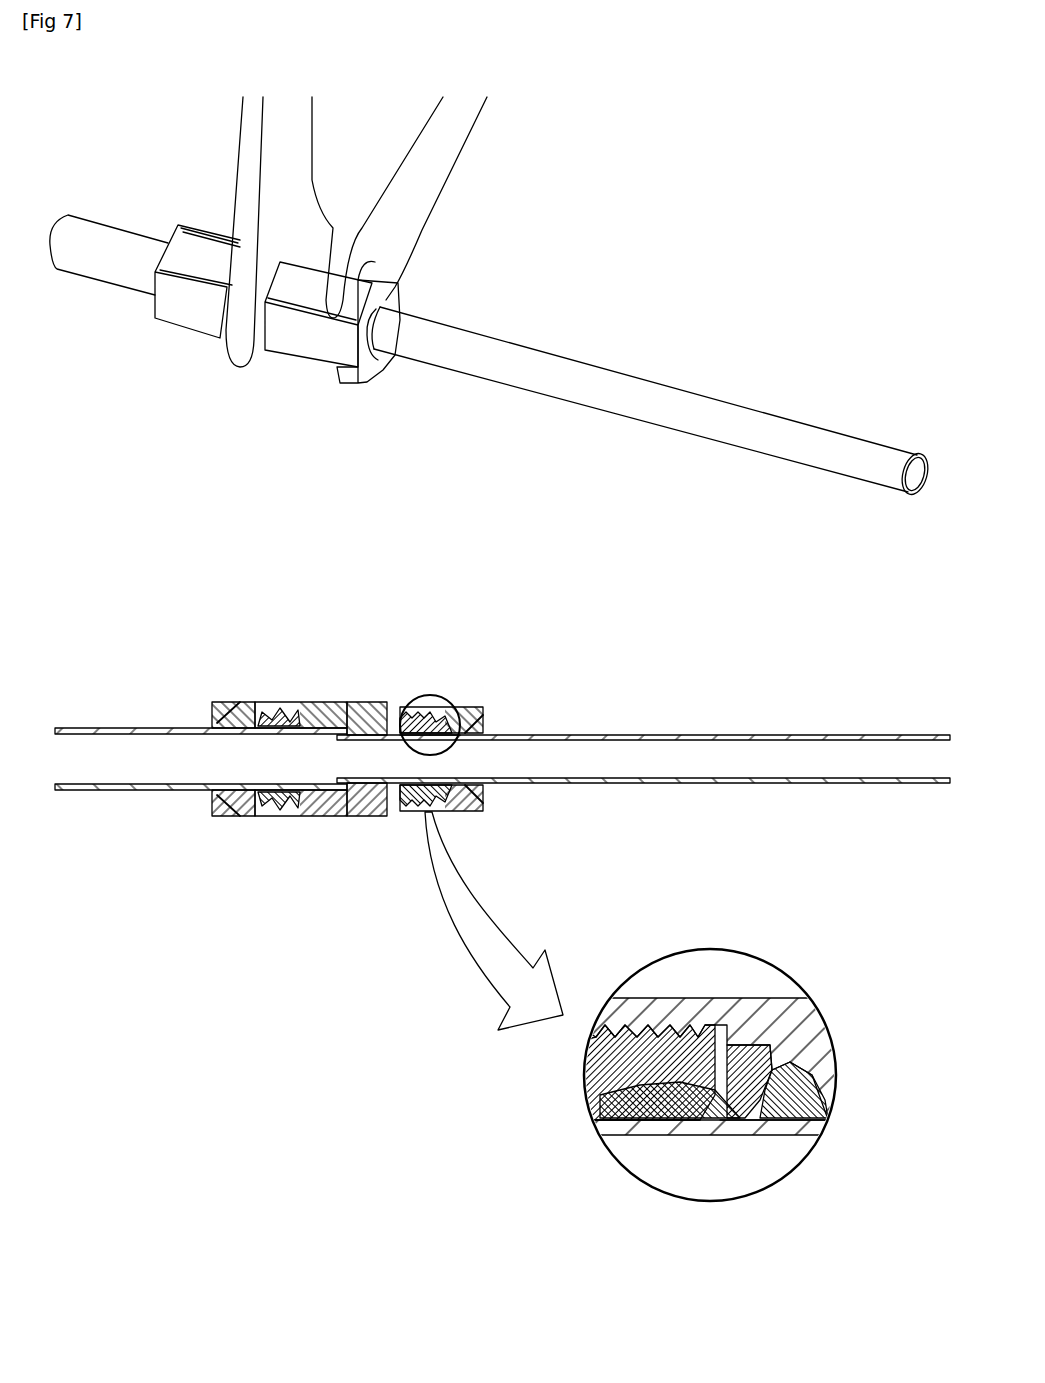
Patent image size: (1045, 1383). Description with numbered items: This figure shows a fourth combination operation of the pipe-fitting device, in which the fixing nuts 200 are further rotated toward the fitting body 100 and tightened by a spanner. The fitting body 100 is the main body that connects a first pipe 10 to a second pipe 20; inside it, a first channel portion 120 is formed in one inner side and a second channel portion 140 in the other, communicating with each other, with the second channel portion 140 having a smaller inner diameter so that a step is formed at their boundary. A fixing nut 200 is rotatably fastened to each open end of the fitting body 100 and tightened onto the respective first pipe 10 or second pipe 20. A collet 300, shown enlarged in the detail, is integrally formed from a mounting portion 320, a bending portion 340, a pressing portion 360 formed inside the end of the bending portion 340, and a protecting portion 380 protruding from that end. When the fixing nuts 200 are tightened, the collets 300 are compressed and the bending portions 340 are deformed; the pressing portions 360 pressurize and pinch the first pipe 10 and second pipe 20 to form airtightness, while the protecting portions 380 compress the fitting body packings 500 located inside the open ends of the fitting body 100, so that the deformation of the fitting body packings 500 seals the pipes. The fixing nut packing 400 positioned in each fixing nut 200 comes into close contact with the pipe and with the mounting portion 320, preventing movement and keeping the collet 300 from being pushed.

The first pipe 10 is at (92, 240).
The second pipe 20 is at (857, 460).
The fitting body 100 is at (303, 539).
The first channel portion 120 is at (318, 702).
The second channel portion 140 is at (375, 702).
The fixing nut 200 is at (193, 310).
The collet 300 is at (618, 906).
The mounting portion 320 is at (790, 1000).
The bending portion 340 is at (730, 1072).
The pressing portion 360 is at (717, 1073).
The protecting portion 380 is at (660, 1040).
The fixing nut packing 400 is at (452, 748).
The fitting body packing 500 is at (415, 748).